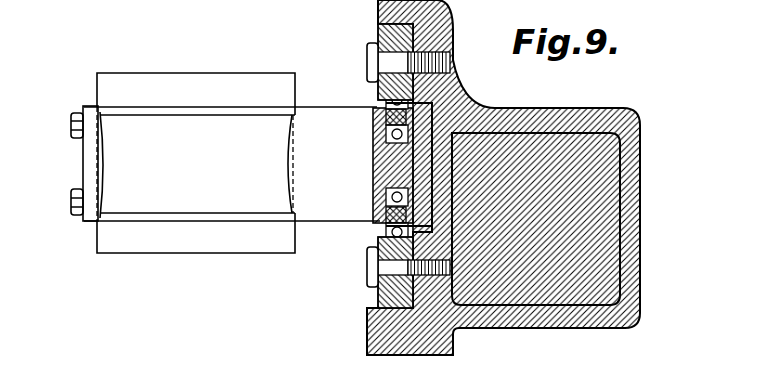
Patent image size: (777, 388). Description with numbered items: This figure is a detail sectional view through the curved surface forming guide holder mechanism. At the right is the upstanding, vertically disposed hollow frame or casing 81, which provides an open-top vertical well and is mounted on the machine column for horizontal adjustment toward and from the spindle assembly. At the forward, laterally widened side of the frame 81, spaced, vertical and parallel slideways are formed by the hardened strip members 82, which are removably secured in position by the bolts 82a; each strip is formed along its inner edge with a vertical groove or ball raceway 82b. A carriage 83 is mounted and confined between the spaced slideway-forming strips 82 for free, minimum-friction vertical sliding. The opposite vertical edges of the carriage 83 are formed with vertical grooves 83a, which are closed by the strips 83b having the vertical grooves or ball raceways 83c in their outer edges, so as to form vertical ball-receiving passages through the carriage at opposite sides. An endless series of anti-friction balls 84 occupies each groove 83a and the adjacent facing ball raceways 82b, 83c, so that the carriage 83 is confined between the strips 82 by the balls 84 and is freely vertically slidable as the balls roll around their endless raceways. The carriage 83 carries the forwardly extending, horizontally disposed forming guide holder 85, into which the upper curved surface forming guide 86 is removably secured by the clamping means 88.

The hollow frame or casing 81 is at (640, 245).
The hardened strip members 82 is at (378, 97).
The bolts 82a is at (372, 62).
The vertical groove or ball raceway 82b is at (450, 73).
The carriage 83 is at (374, 162).
The vertical grooves 83a is at (437, 167).
The strips 83b is at (406, 112).
The vertical grooves or ball raceways 83c is at (432, 108).
The anti-friction balls 84 is at (391, 197).
The forming guide holder 85 is at (303, 125).
The upper curved surface forming guide 86 is at (172, 122).
The clamping means 88 is at (77, 160).